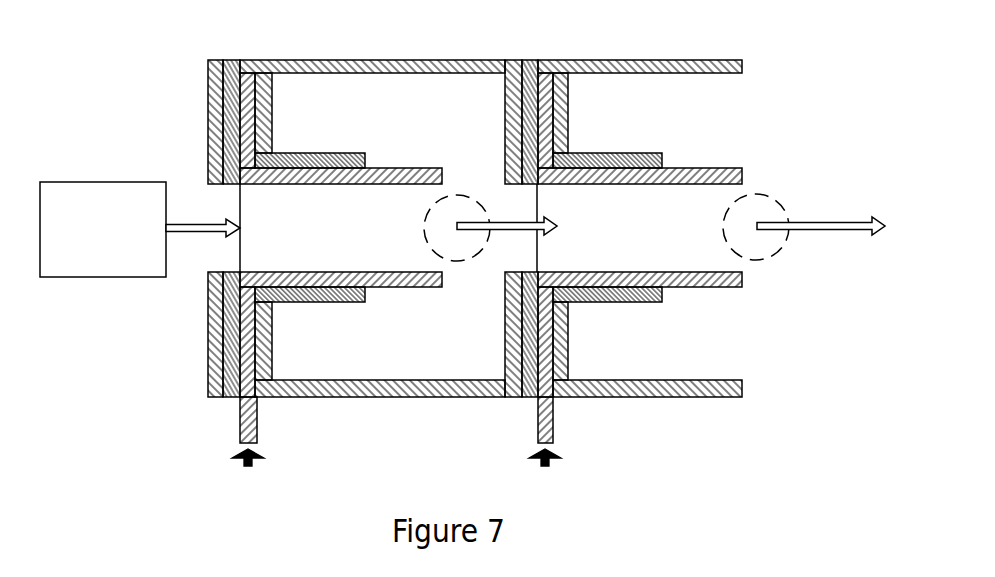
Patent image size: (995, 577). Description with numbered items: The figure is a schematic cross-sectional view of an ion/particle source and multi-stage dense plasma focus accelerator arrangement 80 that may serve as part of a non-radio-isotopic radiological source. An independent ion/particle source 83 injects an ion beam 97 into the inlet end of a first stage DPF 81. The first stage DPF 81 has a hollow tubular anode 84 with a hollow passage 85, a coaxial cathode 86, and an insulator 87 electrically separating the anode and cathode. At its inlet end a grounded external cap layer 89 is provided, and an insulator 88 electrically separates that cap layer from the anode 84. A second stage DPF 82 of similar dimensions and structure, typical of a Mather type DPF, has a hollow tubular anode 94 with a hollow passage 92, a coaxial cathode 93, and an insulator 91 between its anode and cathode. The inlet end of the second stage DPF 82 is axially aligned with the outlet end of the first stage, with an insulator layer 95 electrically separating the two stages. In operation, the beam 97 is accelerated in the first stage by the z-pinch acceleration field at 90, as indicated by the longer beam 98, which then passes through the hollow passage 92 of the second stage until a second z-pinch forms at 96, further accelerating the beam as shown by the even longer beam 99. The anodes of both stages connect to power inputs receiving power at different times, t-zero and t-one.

The particle accelerator system 80 is at (106, 48).
The first stage DPF 81 is at (527, 44).
The second stage DPF 82 is at (748, 44).
The ion/particle source 83 is at (127, 182).
The hollow tubular anode 84 is at (397, 287).
The hollow passage 85 is at (362, 237).
The coaxial cathode 86 is at (363, 397).
The insulator 87 is at (323, 302).
The insulator 88 is at (233, 397).
The grounded external cap layer 89 is at (208, 330).
The z-pinch acceleration field 90 is at (451, 192).
The inner conductor liner of second module 91 is at (700, 287).
The hollow passage 92 is at (652, 236).
The coaxial cathode 93 is at (668, 397).
The hollow tubular anode 94 is at (620, 302).
The insulator layer 95 is at (528, 398).
The second z-pinch 96 is at (750, 191).
The ion beam 97 is at (197, 222).
The beam 98 is at (518, 222).
The beam 99 is at (855, 220).